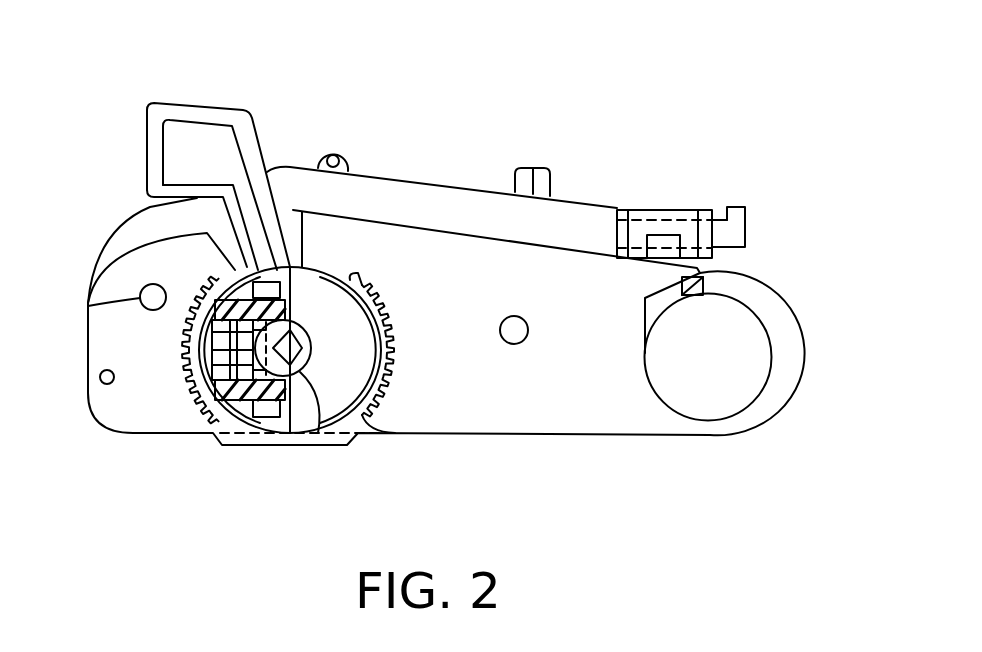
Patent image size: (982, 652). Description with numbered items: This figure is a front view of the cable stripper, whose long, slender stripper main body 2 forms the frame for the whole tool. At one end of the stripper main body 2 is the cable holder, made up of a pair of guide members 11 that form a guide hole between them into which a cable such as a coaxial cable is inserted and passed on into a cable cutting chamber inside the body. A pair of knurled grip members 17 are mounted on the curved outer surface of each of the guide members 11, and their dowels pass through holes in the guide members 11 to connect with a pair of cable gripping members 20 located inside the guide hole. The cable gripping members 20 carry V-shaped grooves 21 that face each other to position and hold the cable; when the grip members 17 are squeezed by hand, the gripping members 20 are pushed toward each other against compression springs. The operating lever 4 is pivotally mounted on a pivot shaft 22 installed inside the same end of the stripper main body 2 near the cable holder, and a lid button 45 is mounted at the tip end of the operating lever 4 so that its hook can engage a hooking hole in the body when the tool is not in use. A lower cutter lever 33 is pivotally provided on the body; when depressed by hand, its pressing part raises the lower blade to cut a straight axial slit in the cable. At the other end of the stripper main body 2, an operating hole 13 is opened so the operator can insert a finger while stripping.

The stripper main body 2 is at (530, 425).
The operating lever 4 is at (405, 180).
The guide members 11 is at (235, 440).
The operating hole 13 is at (752, 347).
The knurled grip members 17 is at (213, 435).
The cable gripping members 20 is at (300, 392).
The V-shaped grooves 21 is at (305, 400).
The pivot shaft 22 is at (90, 303).
The lower cutter lever 33 is at (203, 112).
The lid button 45 is at (745, 222).